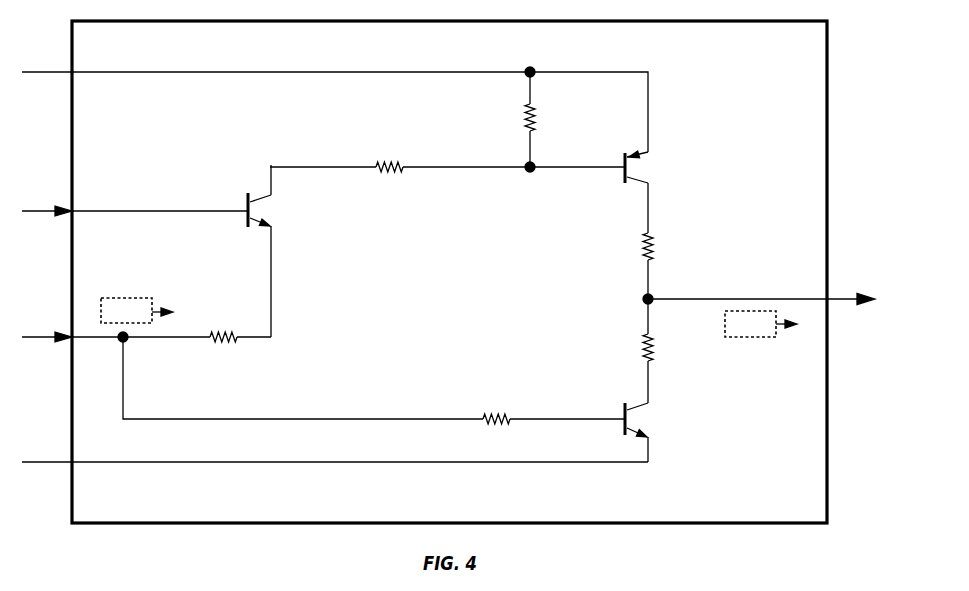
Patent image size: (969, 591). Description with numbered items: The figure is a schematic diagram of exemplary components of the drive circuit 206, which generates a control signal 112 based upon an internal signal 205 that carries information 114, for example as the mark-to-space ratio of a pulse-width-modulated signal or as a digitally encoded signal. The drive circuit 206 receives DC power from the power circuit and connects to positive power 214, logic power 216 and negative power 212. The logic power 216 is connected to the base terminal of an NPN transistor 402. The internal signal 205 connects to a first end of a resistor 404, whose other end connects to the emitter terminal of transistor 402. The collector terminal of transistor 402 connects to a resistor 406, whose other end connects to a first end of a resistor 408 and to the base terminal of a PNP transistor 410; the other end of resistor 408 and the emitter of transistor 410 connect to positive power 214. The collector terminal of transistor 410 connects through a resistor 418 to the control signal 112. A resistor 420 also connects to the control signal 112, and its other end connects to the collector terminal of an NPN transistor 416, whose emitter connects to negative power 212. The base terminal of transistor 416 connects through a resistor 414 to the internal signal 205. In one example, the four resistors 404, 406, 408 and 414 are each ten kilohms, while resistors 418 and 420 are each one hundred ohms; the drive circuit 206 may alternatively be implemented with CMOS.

The control signal 112 is at (855, 297).
The information 114 is at (449, 317).
The internal signal 205 is at (44, 335).
The drive circuit 206 is at (449, 272).
The negative power 212 is at (44, 462).
The positive power 214 is at (44, 70).
The logic power 216 is at (44, 208).
The NPN transistor 402 is at (247, 196).
The resistor 404 is at (223, 344).
The resistor 406 is at (390, 160).
The resistor 408 is at (522, 124).
The PNP transistor 410 is at (628, 155).
The resistor 414 is at (498, 413).
The NPN transistor 416 is at (626, 406).
The resistor 418 is at (644, 249).
The resistor 420 is at (643, 343).